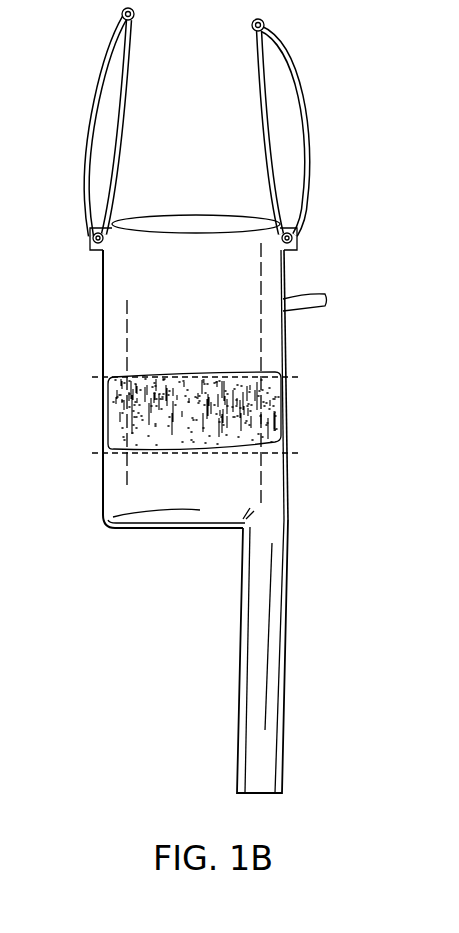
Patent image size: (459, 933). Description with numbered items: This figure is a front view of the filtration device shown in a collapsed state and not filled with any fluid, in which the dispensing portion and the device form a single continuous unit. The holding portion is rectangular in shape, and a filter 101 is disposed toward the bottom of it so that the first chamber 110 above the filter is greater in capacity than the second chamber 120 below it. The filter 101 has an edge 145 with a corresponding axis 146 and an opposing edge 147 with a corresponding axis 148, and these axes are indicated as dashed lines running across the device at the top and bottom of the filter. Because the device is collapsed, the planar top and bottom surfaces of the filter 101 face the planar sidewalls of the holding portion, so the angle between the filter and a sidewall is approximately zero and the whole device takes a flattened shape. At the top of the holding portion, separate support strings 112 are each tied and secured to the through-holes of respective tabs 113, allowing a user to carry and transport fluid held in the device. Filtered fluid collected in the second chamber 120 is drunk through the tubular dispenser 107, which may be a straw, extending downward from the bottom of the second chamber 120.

The filter 101 is at (118, 400).
The tubular dispenser 107 is at (277, 648).
The first chamber 110 is at (330, 225).
The support ties and/or strings 112 is at (303, 100).
The tabs with through-holes 113 is at (90, 240).
The second chamber 120 is at (330, 423).
The edge of the filter 145 is at (267, 373).
The axis corresponding to edge 145 146 is at (212, 377).
The opposing edge of the filter 147 is at (263, 445).
The axis corresponding to edge 147 148 is at (212, 454).